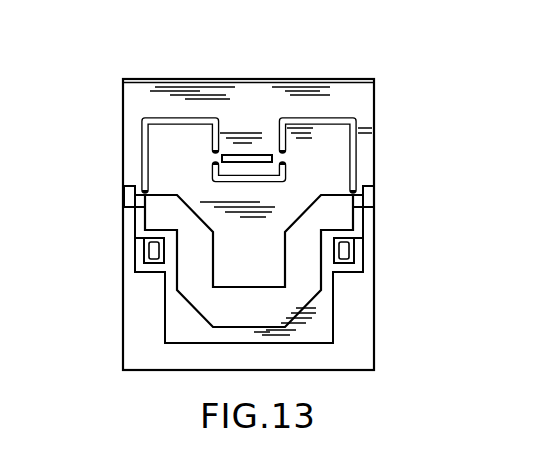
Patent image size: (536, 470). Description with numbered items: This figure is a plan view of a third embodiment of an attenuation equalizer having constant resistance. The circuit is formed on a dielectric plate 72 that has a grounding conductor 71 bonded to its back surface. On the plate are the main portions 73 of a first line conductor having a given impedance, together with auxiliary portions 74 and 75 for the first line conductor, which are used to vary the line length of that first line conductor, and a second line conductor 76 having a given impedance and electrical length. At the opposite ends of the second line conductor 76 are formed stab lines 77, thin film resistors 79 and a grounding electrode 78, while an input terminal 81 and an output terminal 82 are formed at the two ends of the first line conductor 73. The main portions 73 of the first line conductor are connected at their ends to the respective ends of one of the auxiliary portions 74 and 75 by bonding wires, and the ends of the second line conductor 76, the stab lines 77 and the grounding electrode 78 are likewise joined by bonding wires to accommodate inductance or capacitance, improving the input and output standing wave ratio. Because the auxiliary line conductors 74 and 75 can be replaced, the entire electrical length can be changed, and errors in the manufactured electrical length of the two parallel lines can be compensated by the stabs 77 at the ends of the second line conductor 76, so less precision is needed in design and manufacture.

The grounding conductor 71 is at (283, 82).
The dielectric plate 72 is at (257, 71).
The main portions of first line conductor 73 is at (177, 117).
The auxiliary portion of first line conductor 74 is at (243, 156).
The auxiliary portion of first line conductor 75 is at (214, 170).
The second line conductor 76 is at (206, 297).
The stab lines 77 is at (155, 249).
The grounding electrode 78 is at (342, 368).
The thin film resistors 79 is at (135, 208).
The input terminal 81 is at (129, 190).
The output terminal 82 is at (369, 196).